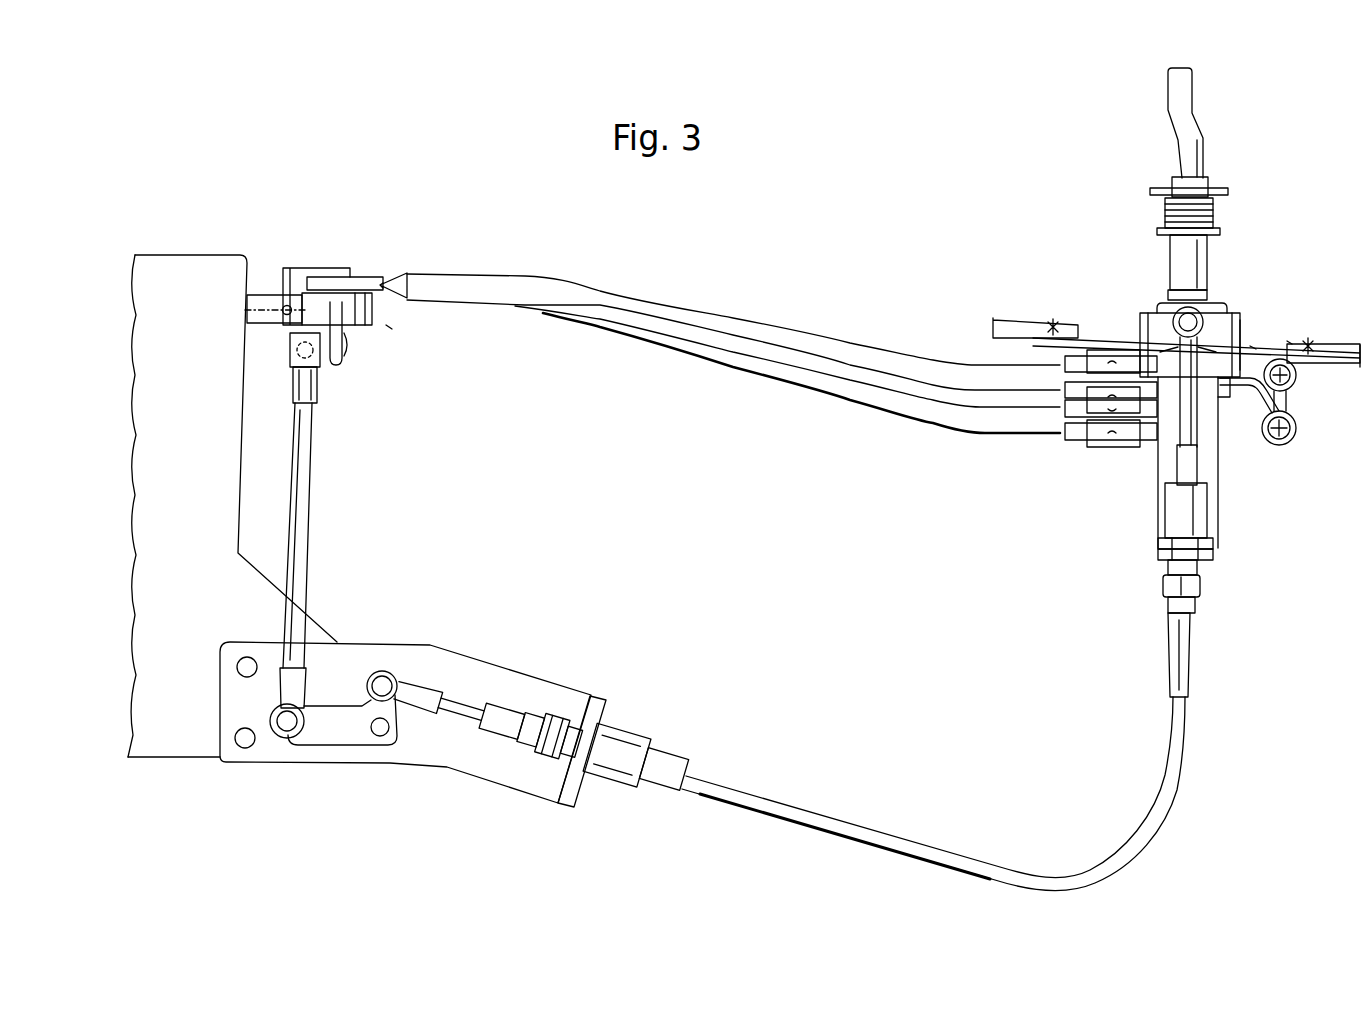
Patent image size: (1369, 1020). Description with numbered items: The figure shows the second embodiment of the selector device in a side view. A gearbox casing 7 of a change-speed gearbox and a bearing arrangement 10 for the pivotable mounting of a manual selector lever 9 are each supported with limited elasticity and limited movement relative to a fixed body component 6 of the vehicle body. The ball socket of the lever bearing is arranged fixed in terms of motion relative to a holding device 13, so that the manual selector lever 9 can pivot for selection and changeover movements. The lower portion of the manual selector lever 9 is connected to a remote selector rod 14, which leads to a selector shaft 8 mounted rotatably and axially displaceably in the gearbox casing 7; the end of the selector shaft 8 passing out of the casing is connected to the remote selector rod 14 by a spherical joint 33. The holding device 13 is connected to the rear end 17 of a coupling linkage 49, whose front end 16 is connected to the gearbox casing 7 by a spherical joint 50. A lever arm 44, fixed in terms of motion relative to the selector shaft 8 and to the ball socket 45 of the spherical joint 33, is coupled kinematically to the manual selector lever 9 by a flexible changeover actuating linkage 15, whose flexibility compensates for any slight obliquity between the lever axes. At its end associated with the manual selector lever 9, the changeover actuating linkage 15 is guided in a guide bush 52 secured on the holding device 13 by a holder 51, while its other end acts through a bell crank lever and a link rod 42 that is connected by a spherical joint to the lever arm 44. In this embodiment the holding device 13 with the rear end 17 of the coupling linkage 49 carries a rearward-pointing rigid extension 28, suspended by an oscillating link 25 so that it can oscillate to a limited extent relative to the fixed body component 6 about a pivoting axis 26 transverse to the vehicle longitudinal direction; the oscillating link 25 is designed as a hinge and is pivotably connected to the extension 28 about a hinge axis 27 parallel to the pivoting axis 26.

The fixed body component 6 is at (1253, 345).
The gearbox casing 7 is at (177, 250).
The selector shaft 8 is at (247, 306).
The manual selector lever 9 is at (1158, 87).
The bearing arrangement 10 is at (1155, 306).
The holding device 13 is at (1232, 300).
The remote selector rod 14 is at (808, 395).
The changeover actuating linkage 15 is at (818, 801).
The front end 16 is at (366, 270).
The rear end 17 is at (1058, 372).
The oscillating link 25 is at (1292, 391).
The pivoting axis 26 is at (1290, 338).
The hinge axis 27 is at (1283, 438).
The rigid extension 28 is at (1262, 398).
The spherical joint 33 is at (392, 330).
The link rod 42 is at (315, 492).
The lever arm 44 is at (338, 370).
The ball socket 45 is at (367, 330).
The coupling linkage 49 is at (849, 330).
The spherical joint 50 is at (313, 258).
The holder 51 is at (1222, 546).
The guide bush 52 is at (1150, 525).